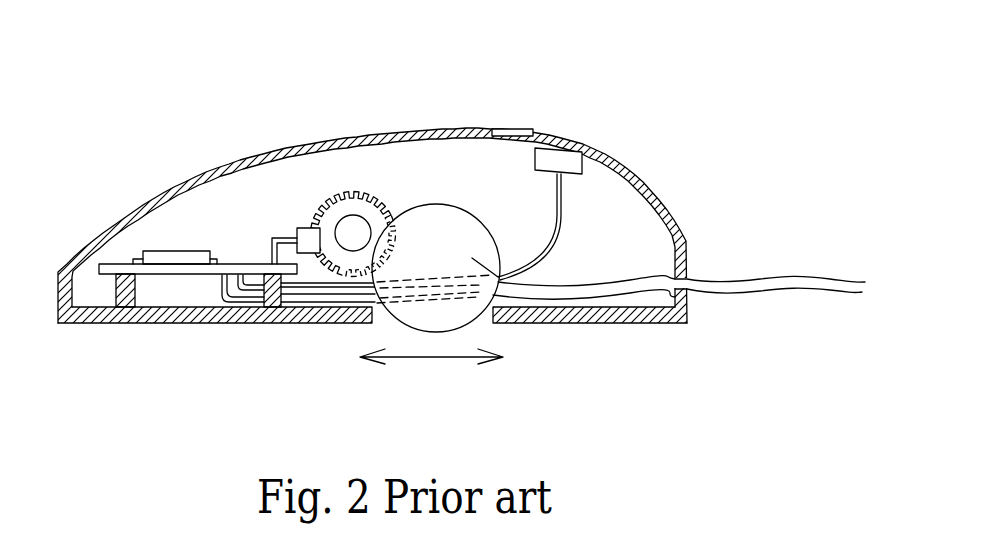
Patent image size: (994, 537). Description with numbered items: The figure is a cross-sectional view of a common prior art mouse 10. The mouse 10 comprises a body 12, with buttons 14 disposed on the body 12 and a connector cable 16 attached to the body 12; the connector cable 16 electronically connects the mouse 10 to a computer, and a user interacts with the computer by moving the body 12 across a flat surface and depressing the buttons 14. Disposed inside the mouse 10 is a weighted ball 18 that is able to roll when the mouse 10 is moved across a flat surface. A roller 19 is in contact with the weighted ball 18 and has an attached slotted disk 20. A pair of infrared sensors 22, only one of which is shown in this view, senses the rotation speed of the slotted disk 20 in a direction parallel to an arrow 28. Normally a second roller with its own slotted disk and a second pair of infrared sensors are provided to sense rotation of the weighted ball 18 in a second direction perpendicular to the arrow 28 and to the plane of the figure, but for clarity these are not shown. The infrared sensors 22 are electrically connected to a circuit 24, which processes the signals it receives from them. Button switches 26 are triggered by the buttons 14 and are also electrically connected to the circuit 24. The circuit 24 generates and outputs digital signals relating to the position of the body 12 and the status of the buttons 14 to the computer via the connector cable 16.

The mouse 10 is at (461, 251).
The body 12 is at (134, 316).
The buttons 14 is at (515, 129).
The connector cable 16 is at (741, 280).
The weighted ball 18 is at (510, 285).
The roller 19 is at (352, 243).
The slotted disk 20 is at (350, 191).
The infrared sensors 22 is at (297, 232).
The circuit 24 is at (226, 268).
The button switches 26 is at (569, 148).
The arrow 28 is at (452, 360).